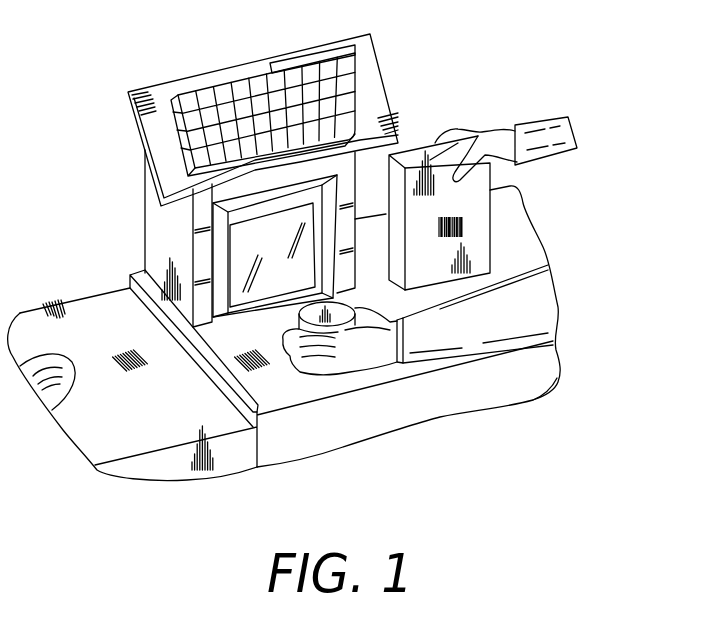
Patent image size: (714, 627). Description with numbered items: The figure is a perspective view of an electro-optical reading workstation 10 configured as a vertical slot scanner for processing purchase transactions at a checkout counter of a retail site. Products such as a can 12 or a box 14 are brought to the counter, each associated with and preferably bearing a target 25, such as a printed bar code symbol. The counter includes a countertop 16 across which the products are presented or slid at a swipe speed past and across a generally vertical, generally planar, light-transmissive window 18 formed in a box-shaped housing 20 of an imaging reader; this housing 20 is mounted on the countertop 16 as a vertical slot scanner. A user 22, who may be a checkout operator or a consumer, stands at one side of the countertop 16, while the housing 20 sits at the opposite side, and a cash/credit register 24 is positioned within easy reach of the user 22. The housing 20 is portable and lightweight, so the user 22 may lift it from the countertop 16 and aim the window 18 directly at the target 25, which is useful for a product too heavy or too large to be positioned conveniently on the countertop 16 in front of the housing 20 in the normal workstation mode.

The electro-optical reading workstation 10 is at (442, 94).
The can 12 is at (340, 374).
The box 14 is at (477, 183).
The countertop 16 is at (262, 397).
The light-transmissive window 18 is at (246, 258).
The box-shaped housing 20 is at (243, 213).
The user 22 is at (546, 302).
The cash/credit register 24 is at (230, 72).
The target 25 is at (462, 228).